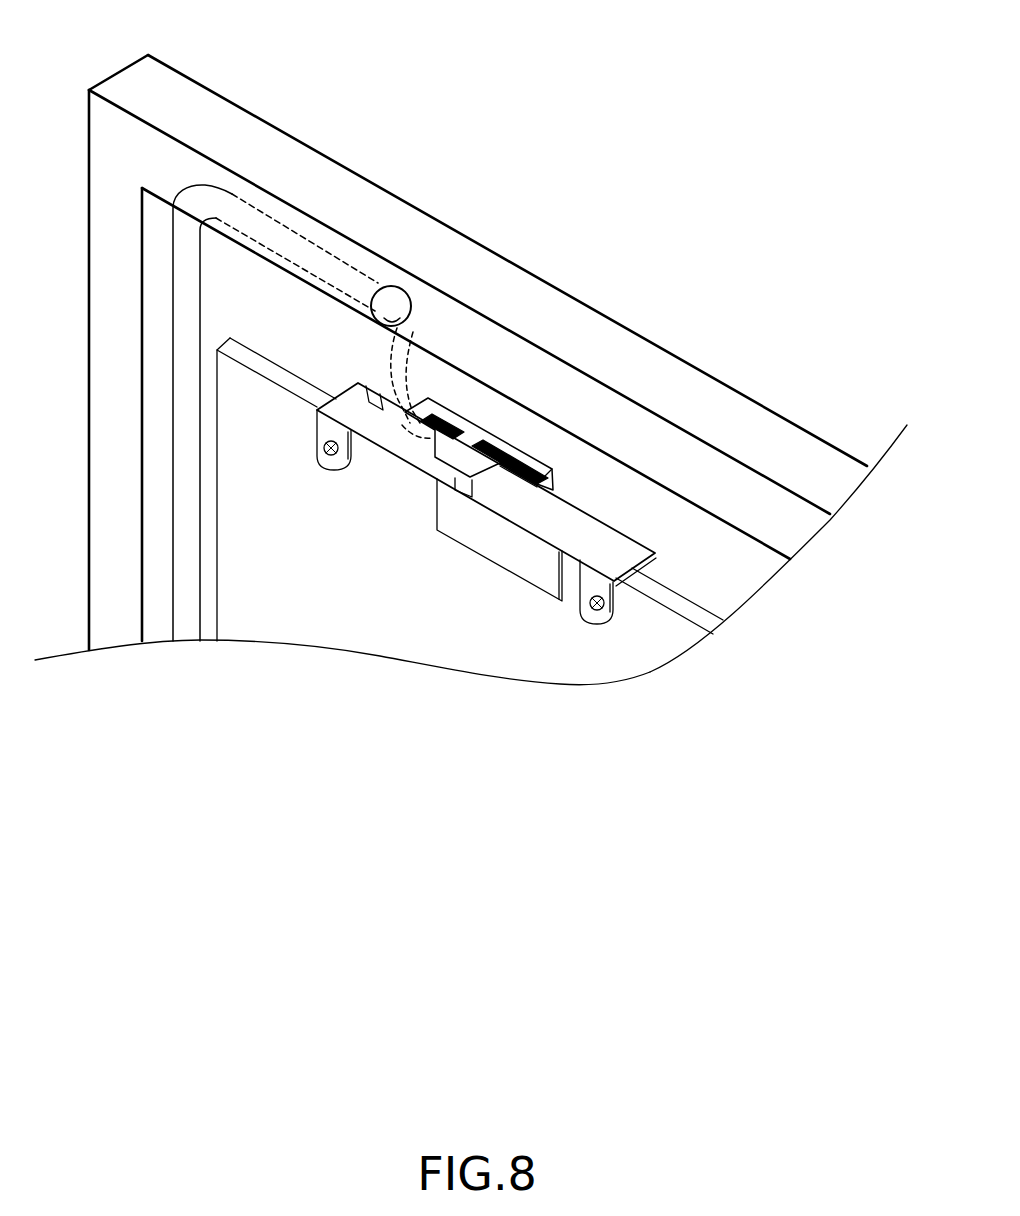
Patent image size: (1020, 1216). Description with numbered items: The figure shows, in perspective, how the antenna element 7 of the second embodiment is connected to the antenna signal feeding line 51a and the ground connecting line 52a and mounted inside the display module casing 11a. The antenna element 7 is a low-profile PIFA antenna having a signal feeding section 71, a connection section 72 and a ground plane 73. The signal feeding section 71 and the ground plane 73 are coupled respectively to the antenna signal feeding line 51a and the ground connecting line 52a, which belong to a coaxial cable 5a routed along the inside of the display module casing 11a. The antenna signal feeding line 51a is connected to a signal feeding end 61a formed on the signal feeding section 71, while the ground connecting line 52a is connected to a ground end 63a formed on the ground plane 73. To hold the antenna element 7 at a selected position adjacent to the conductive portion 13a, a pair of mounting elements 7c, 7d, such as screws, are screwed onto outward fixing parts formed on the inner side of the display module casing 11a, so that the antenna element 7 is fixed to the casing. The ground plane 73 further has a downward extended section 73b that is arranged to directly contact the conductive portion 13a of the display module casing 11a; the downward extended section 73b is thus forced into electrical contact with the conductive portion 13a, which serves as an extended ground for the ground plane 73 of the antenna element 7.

The display module casing 11a is at (178, 95).
The conductive portion 13a is at (637, 653).
The shaft 5a is at (314, 254).
The ground connecting line 52a is at (393, 289).
The antenna signal feeding line 51a is at (405, 340).
The antenna element 7 is at (500, 502).
The ground plane 73 is at (617, 548).
The ground end 63a is at (370, 418).
The mounting element 7d is at (329, 458).
The mounting element 7c is at (592, 617).
The downward extended section 73b is at (511, 558).
The connection section 72 is at (463, 487).
The signal feeding end 61a is at (453, 418).
The signal feeding section 71 is at (537, 463).